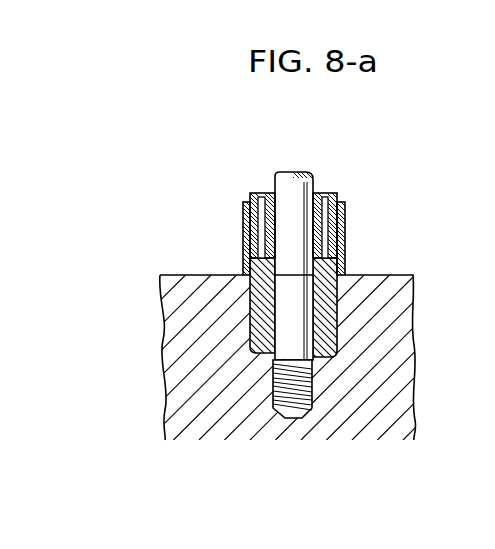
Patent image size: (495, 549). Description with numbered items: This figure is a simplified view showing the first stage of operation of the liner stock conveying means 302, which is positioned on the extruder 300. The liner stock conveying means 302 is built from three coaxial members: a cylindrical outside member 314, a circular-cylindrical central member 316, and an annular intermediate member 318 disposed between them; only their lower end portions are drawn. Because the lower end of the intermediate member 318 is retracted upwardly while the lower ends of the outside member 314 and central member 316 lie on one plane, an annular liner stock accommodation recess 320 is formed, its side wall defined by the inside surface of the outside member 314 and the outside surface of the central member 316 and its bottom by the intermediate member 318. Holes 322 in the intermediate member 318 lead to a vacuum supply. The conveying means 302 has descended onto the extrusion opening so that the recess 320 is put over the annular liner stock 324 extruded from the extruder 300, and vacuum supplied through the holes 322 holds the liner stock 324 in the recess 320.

The extruder 300 is at (408, 310).
The liner stock conveying means 302 is at (312, 266).
The cylindrical outside member 314 is at (345, 243).
The circular-cylindrical central member 316 is at (301, 183).
The annular intermediate member 318 is at (249, 226).
The annular liner stock accommodation recess 320 is at (343, 273).
The holes 322 is at (261, 192).
The annular liner stock 324 is at (252, 273).